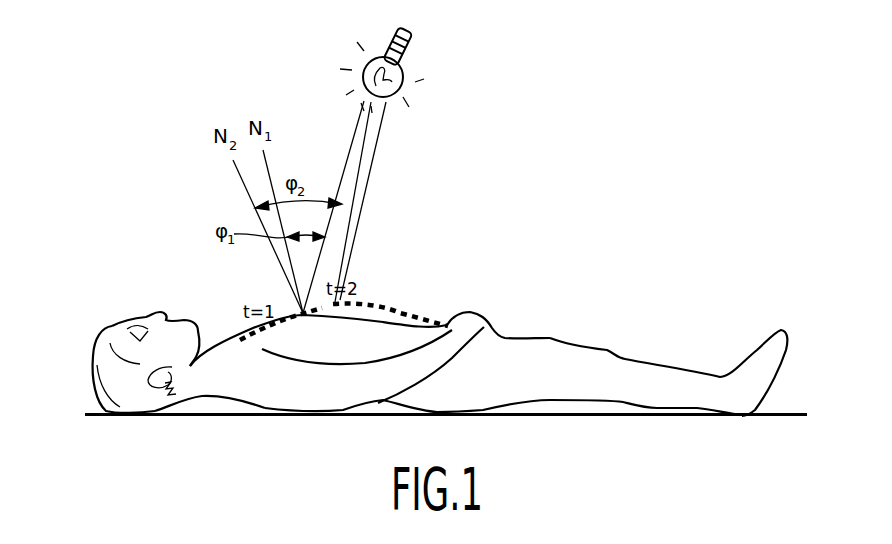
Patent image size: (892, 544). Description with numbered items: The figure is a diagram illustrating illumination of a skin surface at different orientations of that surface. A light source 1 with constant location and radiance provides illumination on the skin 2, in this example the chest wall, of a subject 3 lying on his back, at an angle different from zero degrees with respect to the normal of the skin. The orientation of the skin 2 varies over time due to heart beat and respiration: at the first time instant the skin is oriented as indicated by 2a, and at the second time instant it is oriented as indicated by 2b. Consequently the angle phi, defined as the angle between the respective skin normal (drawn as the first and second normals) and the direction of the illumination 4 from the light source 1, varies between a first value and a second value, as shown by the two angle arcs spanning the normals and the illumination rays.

The light source 1 is at (405, 63).
The skin 2 is at (325, 281).
The skin orientation at t=1 2a is at (240, 331).
The skin orientation at t=2 2b is at (396, 311).
The subject 3 is at (90, 306).
The illumination 4 is at (350, 179).